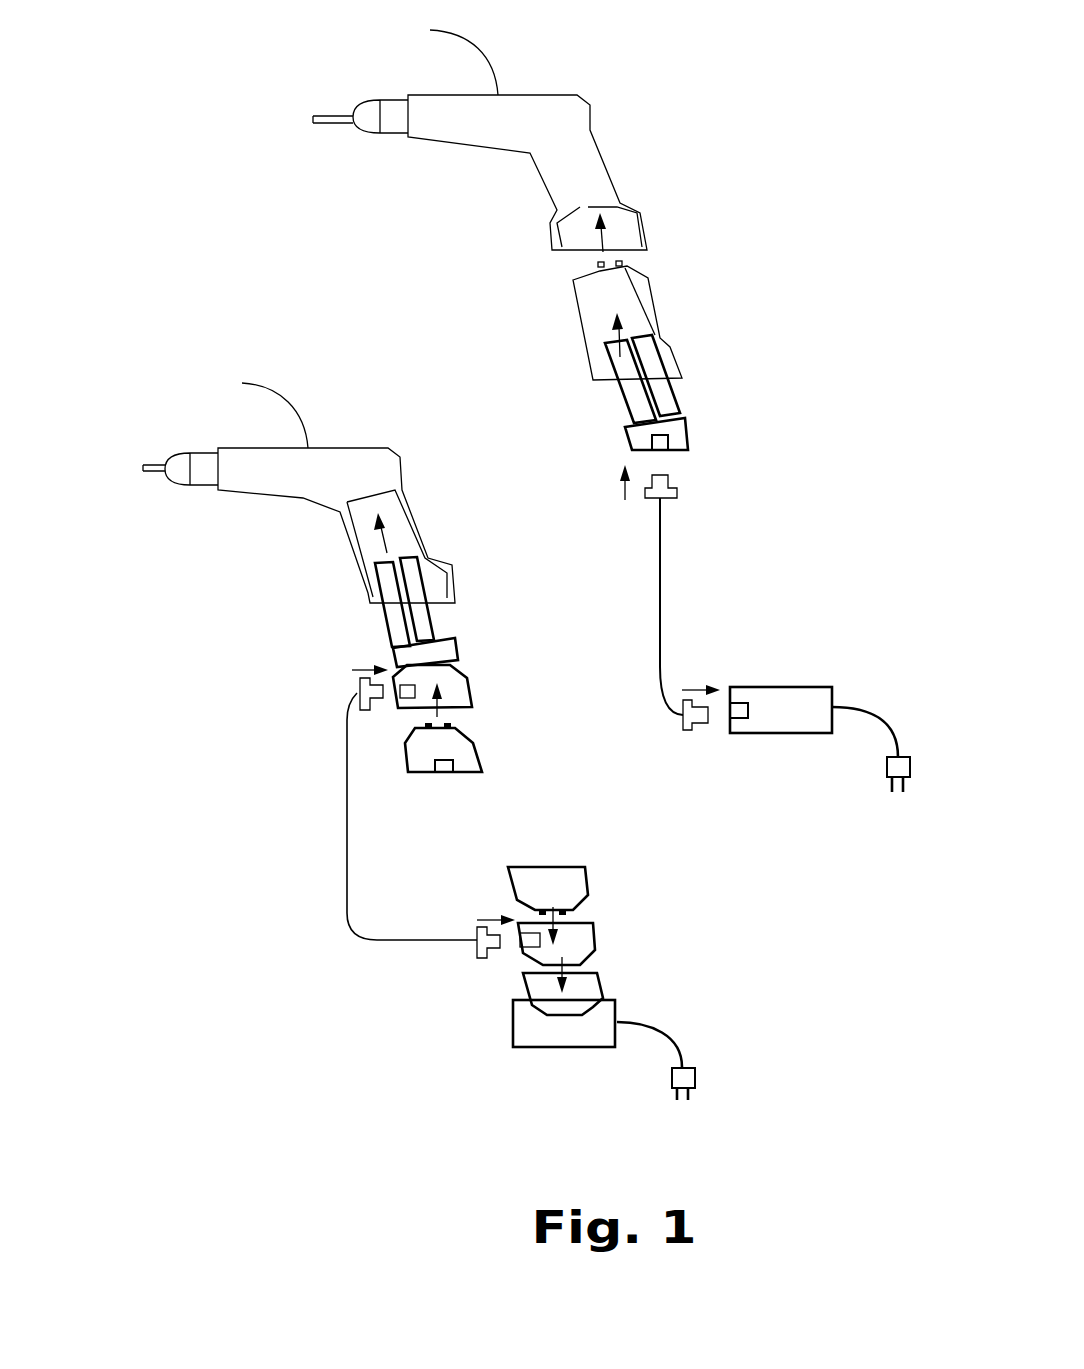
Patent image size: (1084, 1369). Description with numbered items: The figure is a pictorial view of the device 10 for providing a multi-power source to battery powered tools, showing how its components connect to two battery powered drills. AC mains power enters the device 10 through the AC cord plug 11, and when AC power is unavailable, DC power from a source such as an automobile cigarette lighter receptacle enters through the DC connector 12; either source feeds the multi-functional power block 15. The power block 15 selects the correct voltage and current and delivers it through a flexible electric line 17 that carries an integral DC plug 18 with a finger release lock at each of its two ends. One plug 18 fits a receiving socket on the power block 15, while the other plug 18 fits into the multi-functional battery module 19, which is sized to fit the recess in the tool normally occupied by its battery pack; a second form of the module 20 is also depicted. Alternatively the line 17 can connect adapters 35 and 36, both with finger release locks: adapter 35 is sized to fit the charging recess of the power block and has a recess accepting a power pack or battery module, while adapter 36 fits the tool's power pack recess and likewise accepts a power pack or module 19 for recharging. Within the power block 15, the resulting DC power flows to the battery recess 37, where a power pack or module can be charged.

The device 10 is at (716, 62).
The AC cord plug 11 is at (789, 916).
The DC connector 12 is at (847, 705).
The multi-functional power block 15 is at (755, 687).
The flexible electric line 17 is at (658, 542).
The DC plug 18 is at (680, 495).
The multi-functional battery module 19 is at (478, 747).
The multi-functional battery module 20 is at (693, 428).
The adapter 35 is at (683, 368).
The adapter 36 is at (460, 670).
The battery recess 37 is at (602, 993).